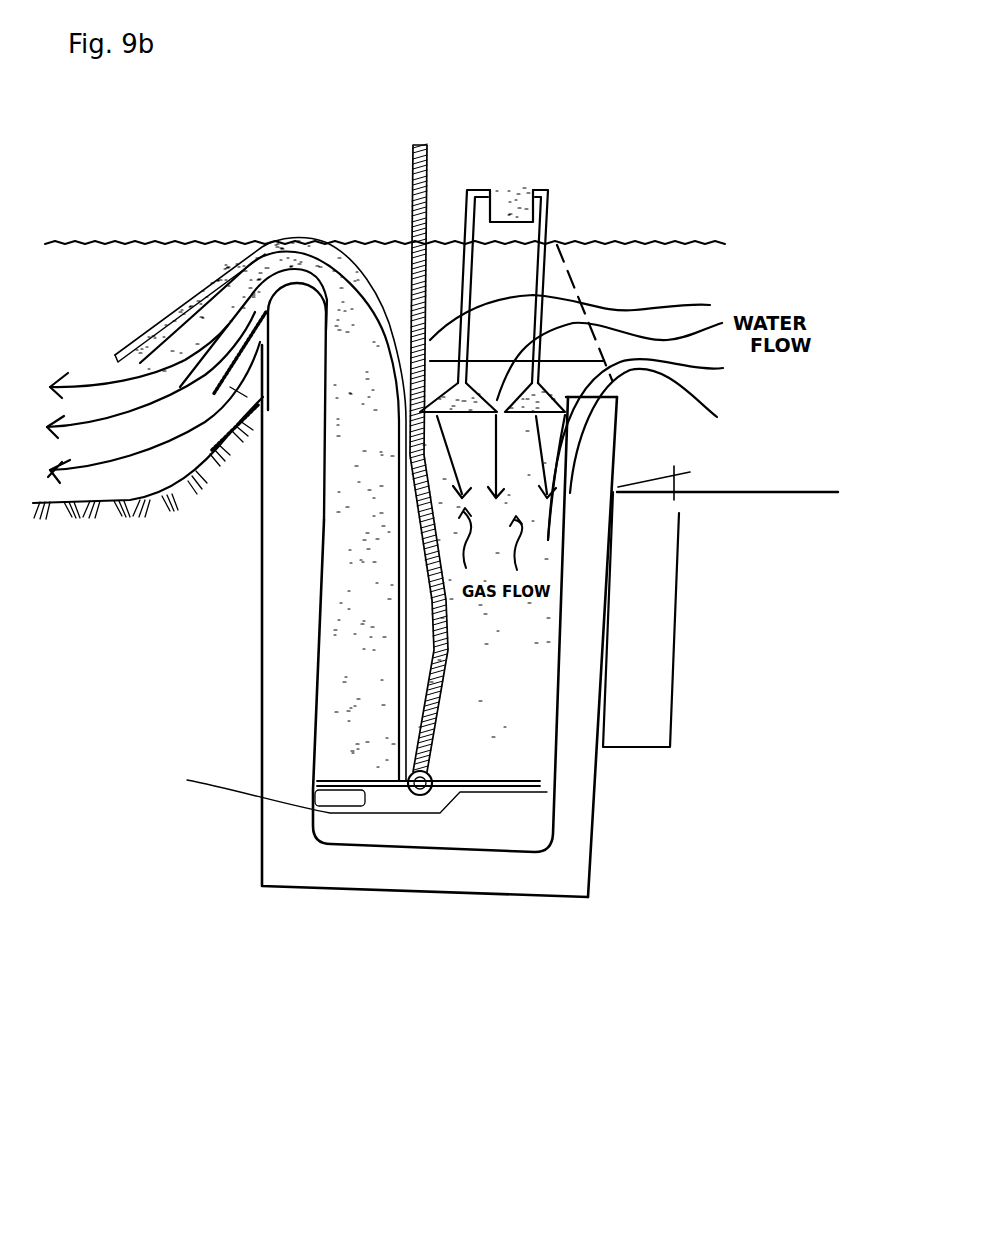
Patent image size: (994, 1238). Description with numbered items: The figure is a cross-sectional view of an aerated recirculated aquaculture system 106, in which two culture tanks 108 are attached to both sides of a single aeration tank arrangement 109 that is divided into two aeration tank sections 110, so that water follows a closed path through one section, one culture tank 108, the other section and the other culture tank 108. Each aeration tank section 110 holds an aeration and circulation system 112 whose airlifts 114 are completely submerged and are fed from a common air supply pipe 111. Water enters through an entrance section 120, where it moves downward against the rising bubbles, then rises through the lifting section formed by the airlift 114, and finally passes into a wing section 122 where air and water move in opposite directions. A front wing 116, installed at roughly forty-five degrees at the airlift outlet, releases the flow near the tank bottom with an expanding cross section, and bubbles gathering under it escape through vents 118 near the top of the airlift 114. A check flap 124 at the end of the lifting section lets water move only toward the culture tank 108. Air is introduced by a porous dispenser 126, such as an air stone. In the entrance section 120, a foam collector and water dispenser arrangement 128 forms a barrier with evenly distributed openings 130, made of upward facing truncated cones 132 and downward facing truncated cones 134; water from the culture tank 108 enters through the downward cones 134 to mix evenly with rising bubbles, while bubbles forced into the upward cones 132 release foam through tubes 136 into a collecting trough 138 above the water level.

The aerated recirculated aquaculture system 106 is at (136, 1062).
The culture tank 108 is at (140, 503).
The aeration tank arrangement 109 is at (263, 808).
The aeration tank section 110 is at (330, 887).
The air supply pipe 111 is at (410, 187).
The aeration and circulation system 112 is at (456, 134).
The airlift 114 is at (315, 643).
The front wing 116 is at (147, 318).
The vent 118 is at (300, 232).
The entrance section 120 is at (597, 770).
The wing section 122 is at (135, 338).
The check flap 124 is at (217, 363).
The porous dispenser 126 is at (313, 780).
The foam collector and water dispenser arrangement 128 is at (617, 400).
The opening 130 is at (575, 398).
The upward facing truncated cone 132 is at (411, 227).
The downward facing truncated cone 134 is at (615, 493).
The tube 136 is at (557, 220).
The collecting trough 138 is at (530, 187).